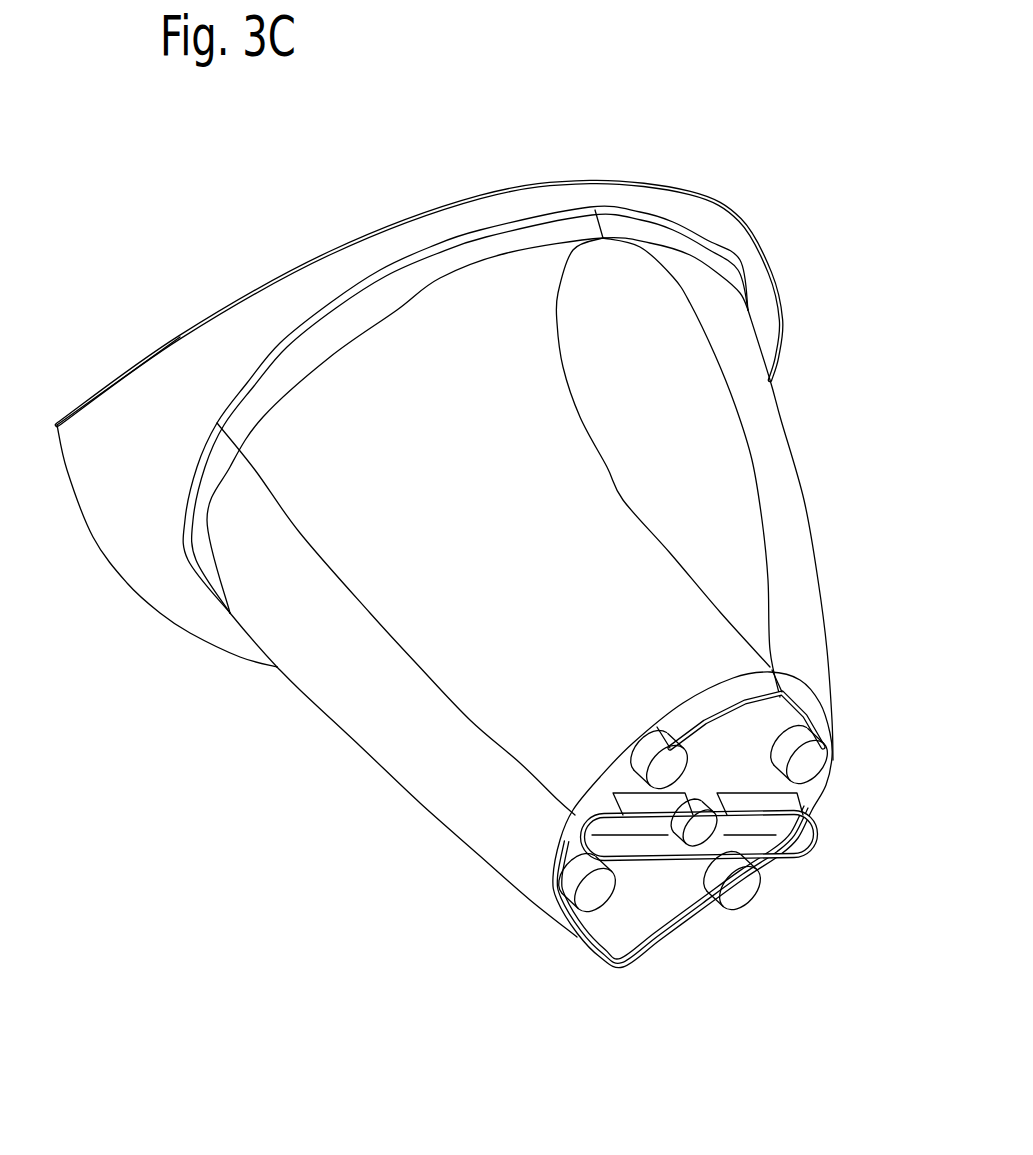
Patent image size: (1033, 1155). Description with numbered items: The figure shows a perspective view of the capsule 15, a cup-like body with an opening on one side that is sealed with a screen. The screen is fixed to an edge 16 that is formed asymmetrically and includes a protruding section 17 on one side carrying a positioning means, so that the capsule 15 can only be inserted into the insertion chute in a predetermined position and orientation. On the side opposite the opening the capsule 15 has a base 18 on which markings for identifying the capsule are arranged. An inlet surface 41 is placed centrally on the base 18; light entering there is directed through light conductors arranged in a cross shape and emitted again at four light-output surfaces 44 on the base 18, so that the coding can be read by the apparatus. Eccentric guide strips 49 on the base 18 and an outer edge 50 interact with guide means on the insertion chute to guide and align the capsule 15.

The capsule 15 is at (482, 367).
The edge 16 is at (470, 214).
The protruding section 17 is at (112, 425).
The base 18 is at (667, 883).
The inlet surface 41 is at (703, 830).
The light-output surfaces 44 is at (807, 767).
The eccentric guide strips 49 is at (630, 842).
The outer edge 50 is at (638, 950).